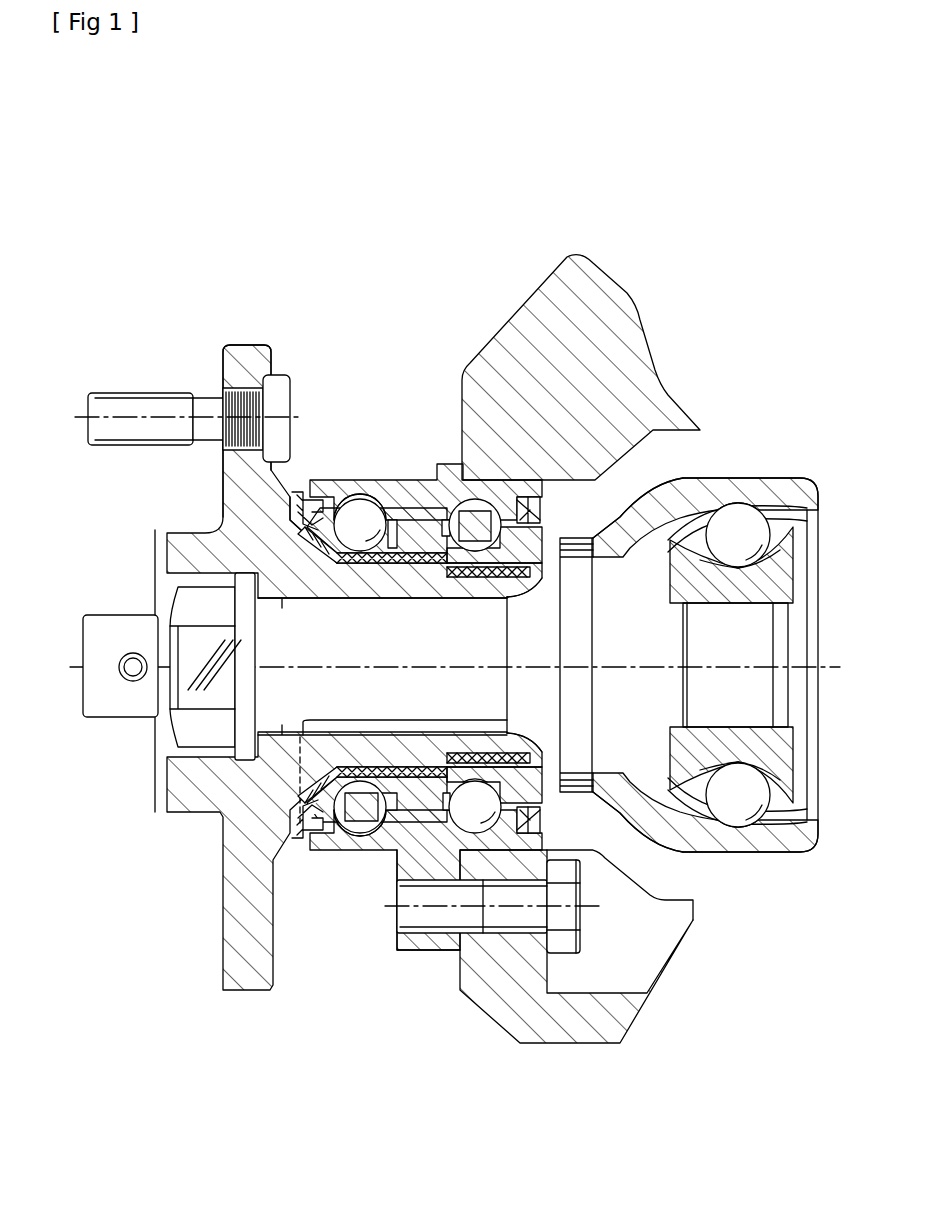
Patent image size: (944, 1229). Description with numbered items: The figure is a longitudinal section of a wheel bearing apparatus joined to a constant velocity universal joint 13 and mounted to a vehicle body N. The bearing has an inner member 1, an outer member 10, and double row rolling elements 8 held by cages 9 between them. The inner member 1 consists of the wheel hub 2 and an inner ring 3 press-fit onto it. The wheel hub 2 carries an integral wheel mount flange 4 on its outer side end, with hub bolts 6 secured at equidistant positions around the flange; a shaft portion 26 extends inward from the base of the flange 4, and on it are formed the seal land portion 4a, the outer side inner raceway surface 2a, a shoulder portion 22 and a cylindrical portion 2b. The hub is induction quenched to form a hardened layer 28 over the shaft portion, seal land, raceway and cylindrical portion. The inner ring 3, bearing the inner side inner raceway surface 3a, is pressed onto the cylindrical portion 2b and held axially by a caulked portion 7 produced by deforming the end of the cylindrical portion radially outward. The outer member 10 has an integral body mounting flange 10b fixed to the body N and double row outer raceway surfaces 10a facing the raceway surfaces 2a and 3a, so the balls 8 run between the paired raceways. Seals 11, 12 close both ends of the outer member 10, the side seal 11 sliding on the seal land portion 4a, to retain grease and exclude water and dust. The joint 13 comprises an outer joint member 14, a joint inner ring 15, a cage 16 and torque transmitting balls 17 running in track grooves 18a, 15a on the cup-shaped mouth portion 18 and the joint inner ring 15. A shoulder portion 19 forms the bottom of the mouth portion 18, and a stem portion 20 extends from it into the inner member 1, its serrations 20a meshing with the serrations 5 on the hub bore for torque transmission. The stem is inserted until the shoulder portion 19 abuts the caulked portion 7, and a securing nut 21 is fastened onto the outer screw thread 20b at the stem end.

The inner member 1 is at (228, 771).
The wheel hub 2 is at (337, 636).
The inner raceway surface 2a is at (293, 533).
The cylindrical portion 2b is at (520, 580).
The inner ring 3 is at (518, 646).
The inner raceway surface 3a is at (482, 550).
The wheel mount flange 4 is at (236, 347).
The seal land portion 4a is at (293, 497).
The serrations 5 is at (392, 600).
The hub bolts 6 is at (148, 405).
The caulked portion 7 is at (617, 560).
The rolling elements 8 is at (357, 827).
The cages 9 is at (443, 794).
The outer member 10 is at (455, 712).
The outer raceway surfaces 10a is at (356, 505).
The body mounting flange 10b is at (420, 951).
The side seal 11 is at (310, 835).
The seal 12 is at (545, 822).
The constant velocity universal joint 13 is at (716, 576).
The outer joint member 14 is at (690, 477).
The joint inner ring 15 is at (771, 665).
The track grooves 15a is at (780, 574).
The cage 16 is at (787, 540).
The torque transmitting balls 17 is at (738, 512).
The mouth portion 18 is at (800, 485).
The track grooves 18a is at (787, 513).
The shoulder portion 19 is at (577, 543).
The stem portion 20 is at (286, 692).
The serrations 20a is at (327, 600).
The outer screw thread 20b is at (132, 720).
The securing nut 21 is at (183, 613).
The shoulder portion 22 is at (455, 568).
The shaft portion 26 is at (425, 719).
The hardened layer 28 is at (412, 565).
The body N is at (507, 340).